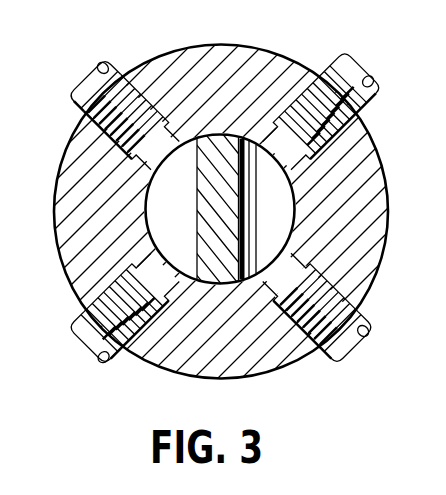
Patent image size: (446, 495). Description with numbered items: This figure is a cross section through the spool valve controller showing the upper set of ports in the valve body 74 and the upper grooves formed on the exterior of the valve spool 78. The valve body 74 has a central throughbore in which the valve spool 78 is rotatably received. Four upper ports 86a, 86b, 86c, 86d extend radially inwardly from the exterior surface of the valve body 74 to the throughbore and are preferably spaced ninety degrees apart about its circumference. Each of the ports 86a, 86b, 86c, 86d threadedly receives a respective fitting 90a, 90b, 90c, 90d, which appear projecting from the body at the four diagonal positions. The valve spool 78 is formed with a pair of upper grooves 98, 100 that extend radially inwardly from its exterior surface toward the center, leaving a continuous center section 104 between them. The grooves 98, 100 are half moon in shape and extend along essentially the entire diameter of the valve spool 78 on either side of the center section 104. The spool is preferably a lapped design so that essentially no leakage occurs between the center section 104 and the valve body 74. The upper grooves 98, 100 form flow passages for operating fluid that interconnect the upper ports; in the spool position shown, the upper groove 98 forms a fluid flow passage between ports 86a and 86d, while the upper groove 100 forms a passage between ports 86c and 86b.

The valve body 74 is at (60, 151).
The valve spool 78 is at (139, 198).
The upper port 86a is at (182, 112).
The upper port 86b is at (272, 118).
The upper port 86c is at (260, 332).
The upper port 86d is at (163, 332).
The fitting 90a is at (110, 72).
The fitting 90b is at (350, 63).
The fitting 90c is at (363, 345).
The fitting 90d is at (112, 363).
The upper groove 98 is at (167, 218).
The upper groove 100 is at (288, 210).
The center section 104 is at (230, 238).